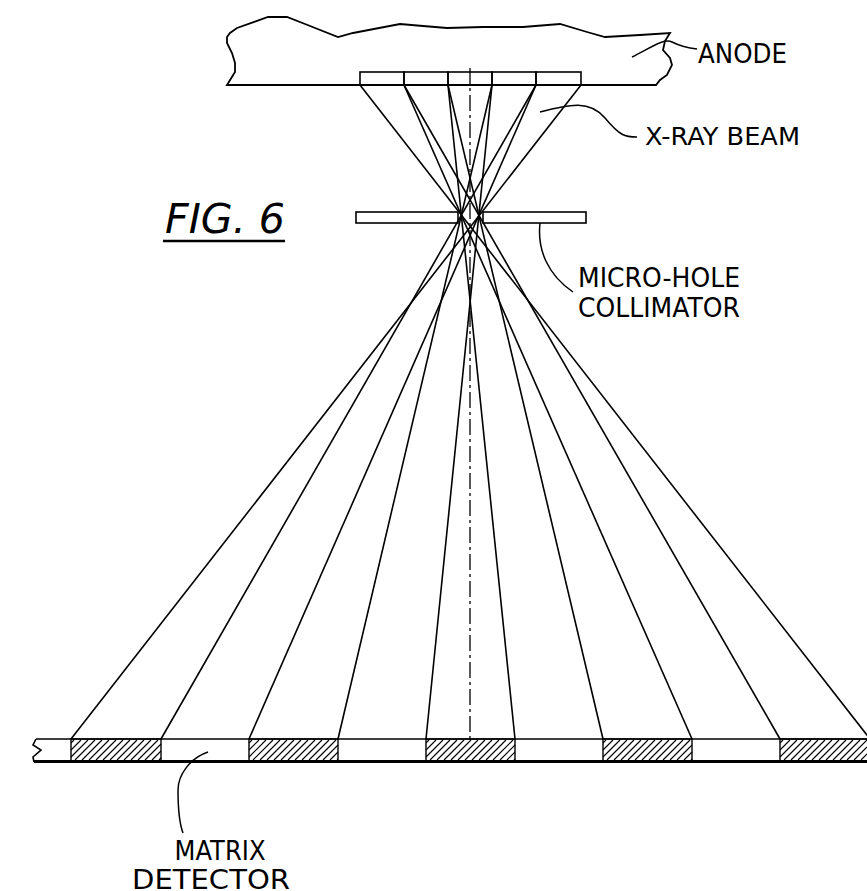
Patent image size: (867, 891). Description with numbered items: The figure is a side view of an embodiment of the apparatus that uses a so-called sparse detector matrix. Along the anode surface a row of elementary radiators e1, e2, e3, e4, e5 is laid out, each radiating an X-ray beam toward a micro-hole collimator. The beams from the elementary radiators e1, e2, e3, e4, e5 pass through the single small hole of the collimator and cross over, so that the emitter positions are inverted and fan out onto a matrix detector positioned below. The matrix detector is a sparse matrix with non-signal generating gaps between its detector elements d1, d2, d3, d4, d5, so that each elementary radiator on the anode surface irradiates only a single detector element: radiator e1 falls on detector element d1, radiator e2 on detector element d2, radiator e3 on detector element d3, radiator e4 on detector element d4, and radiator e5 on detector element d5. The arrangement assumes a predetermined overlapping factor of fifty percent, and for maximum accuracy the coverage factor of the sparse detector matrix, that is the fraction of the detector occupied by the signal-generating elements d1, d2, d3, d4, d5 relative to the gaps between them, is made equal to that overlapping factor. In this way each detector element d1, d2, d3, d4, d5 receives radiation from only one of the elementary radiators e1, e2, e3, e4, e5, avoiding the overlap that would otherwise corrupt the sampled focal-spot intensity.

The X-ray emitter segment e1 is at (326, 390).
The X-ray emitter segment e2 is at (392, 390).
The X-ray emitter segment e3 is at (470, 390).
The X-ray emitter segment e4 is at (548, 390).
The X-ray emitter segment e5 is at (613, 390).
The matrix detector segment d1 is at (116, 762).
The matrix detector segment d2 is at (294, 762).
The matrix detector segment d3 is at (471, 762).
The matrix detector segment d4 is at (648, 762).
The matrix detector segment d5 is at (825, 762).